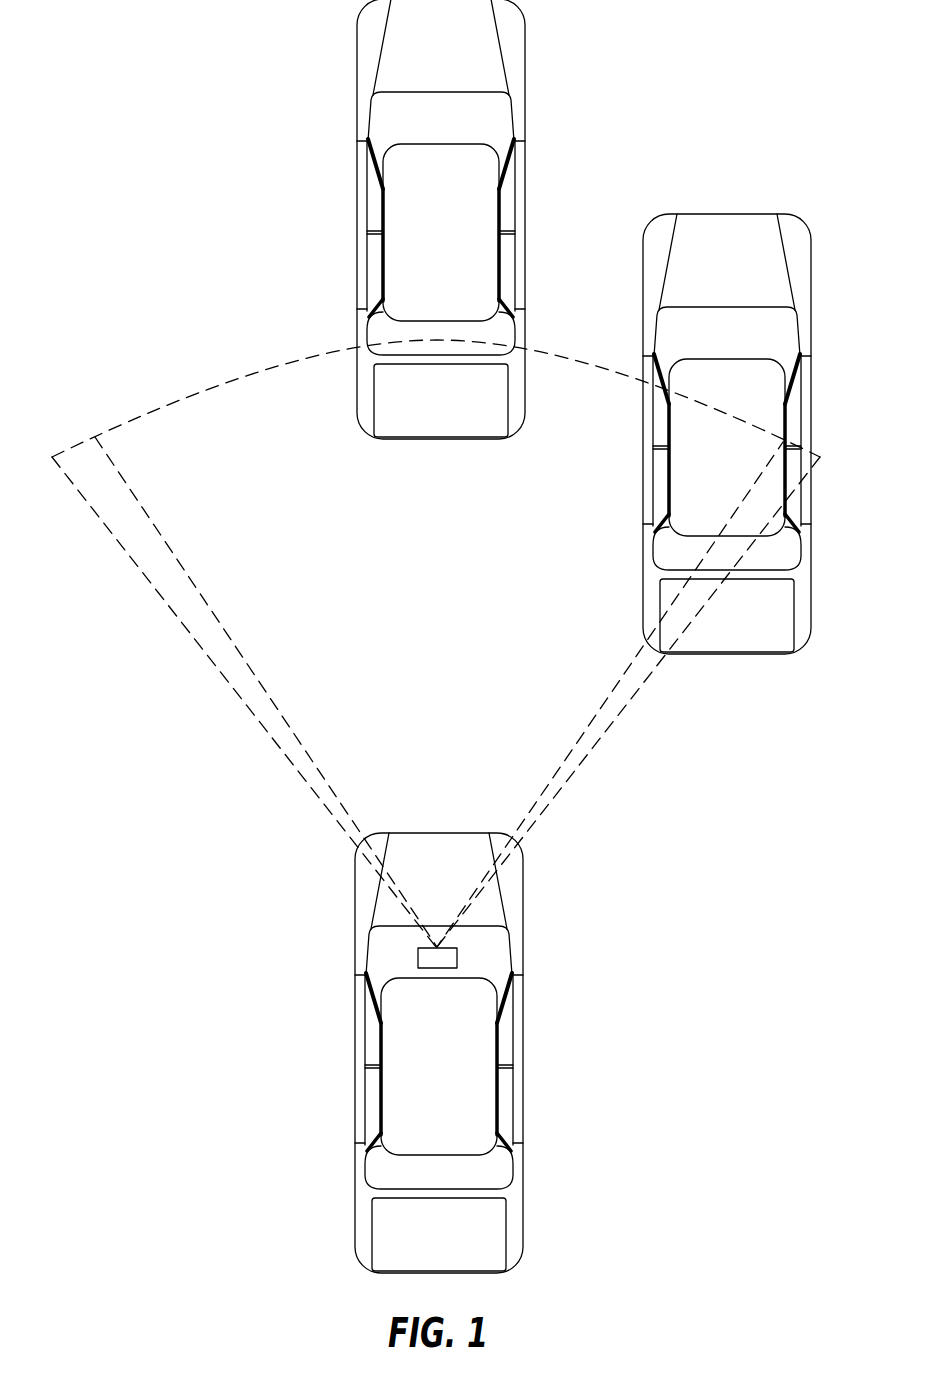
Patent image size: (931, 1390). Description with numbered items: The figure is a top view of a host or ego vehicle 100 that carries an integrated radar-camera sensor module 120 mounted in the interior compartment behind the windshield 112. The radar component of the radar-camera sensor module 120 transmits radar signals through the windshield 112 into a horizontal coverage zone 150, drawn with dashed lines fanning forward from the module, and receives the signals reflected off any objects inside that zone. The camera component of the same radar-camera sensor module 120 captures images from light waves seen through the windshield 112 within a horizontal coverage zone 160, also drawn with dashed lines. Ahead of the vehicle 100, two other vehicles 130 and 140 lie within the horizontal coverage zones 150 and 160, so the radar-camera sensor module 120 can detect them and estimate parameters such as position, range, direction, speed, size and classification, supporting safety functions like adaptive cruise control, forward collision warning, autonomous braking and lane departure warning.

The vehicle 100 is at (434, 1053).
The windshield 112 is at (380, 950).
The radar-camera sensor module 120 is at (457, 959).
The vehicle 130 is at (357, 74).
The vehicle 140 is at (643, 283).
The horizontal coverage zone 150 is at (226, 683).
The horizontal coverage zone 160 is at (247, 665).